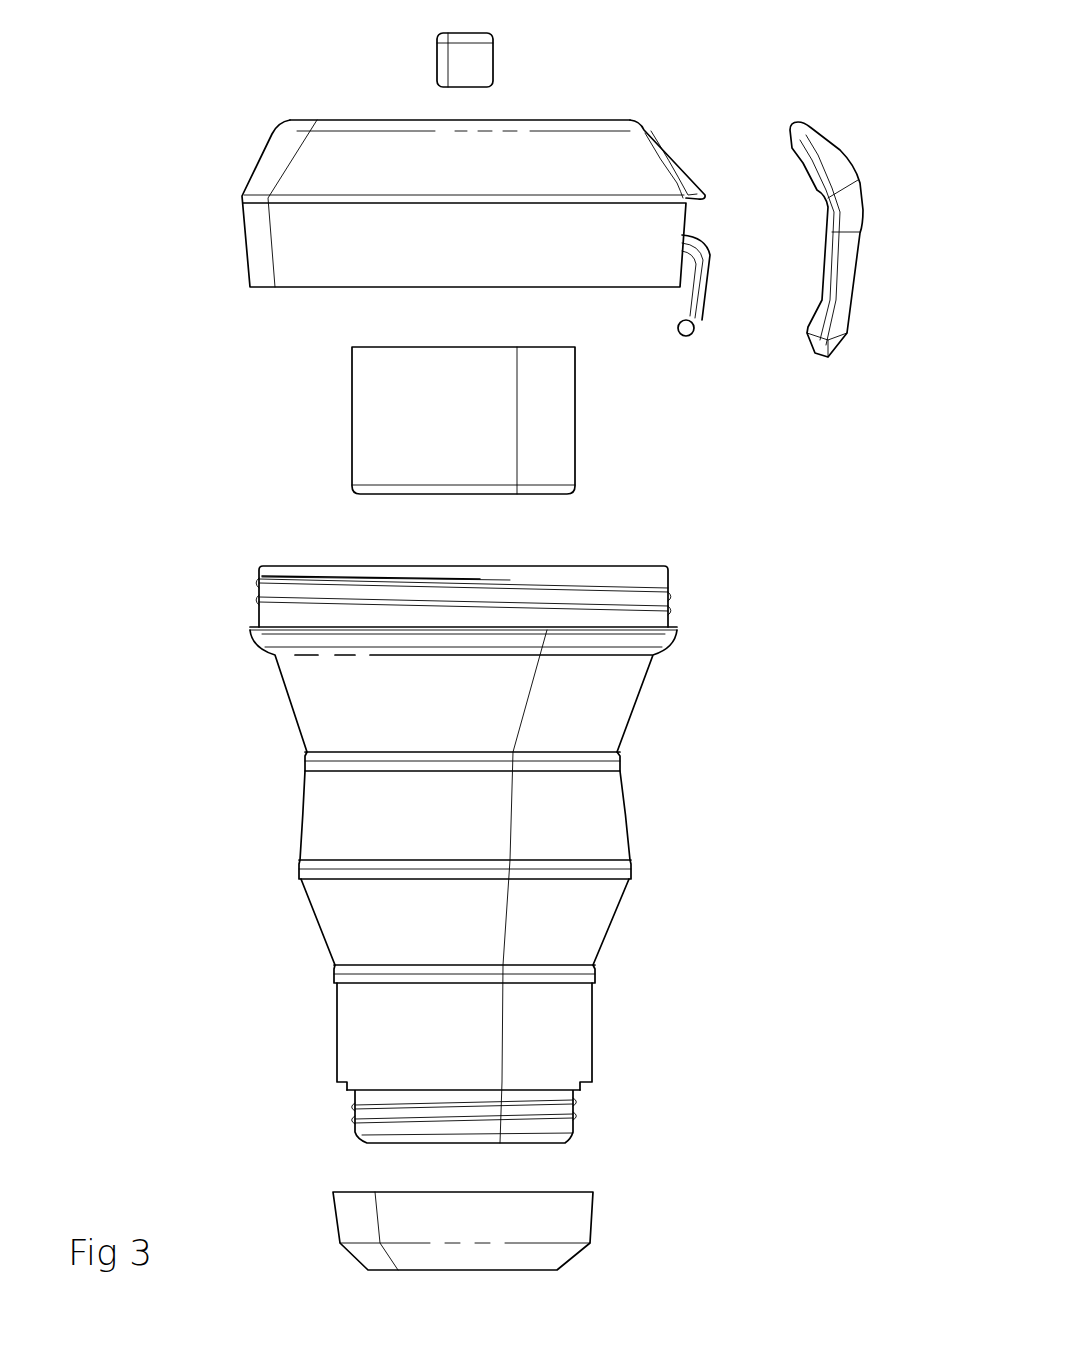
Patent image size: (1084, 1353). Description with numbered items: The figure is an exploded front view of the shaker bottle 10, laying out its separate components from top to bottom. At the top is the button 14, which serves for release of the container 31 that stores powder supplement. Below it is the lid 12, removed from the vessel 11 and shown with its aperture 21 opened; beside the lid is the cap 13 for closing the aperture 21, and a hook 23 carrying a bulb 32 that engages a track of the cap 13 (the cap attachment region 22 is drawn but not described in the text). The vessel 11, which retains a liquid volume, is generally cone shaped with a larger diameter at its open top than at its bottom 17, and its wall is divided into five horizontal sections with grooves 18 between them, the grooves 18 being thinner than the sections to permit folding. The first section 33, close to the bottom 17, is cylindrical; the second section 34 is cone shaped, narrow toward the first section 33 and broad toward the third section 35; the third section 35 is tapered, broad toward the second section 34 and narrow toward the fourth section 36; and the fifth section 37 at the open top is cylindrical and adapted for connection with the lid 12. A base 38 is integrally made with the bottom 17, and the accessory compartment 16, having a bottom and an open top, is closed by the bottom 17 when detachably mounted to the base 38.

The shaker bottle 10 is at (196, 78).
The vessel 11 is at (472, 862).
The lid 12 is at (355, 153).
The cap 13 is at (853, 200).
The button 14 is at (440, 75).
The accessory compartment 16 is at (565, 1223).
The bottom 17 is at (593, 1083).
The grooves 18 is at (308, 760).
The aperture 21 is at (685, 140).
The handle attachment 22 is at (788, 150).
The hook 23 is at (740, 258).
The container 31 is at (397, 418).
The bulb 32 is at (694, 336).
The first section 33 is at (348, 1057).
The second section 34 is at (323, 890).
The third section 35 is at (327, 803).
The fourth section 36 is at (290, 677).
The fifth section 37 is at (672, 593).
The base 38 is at (576, 1125).